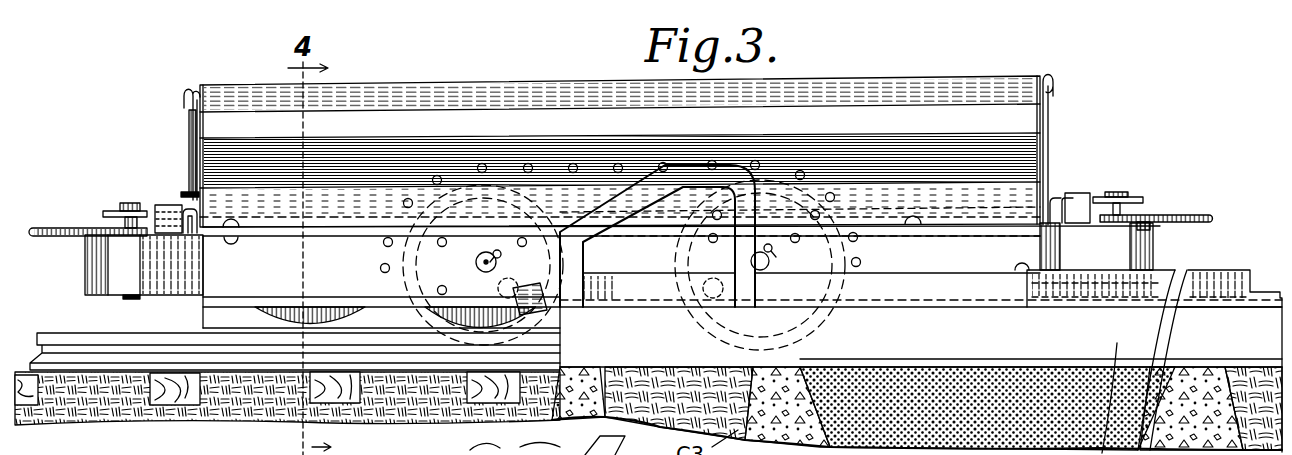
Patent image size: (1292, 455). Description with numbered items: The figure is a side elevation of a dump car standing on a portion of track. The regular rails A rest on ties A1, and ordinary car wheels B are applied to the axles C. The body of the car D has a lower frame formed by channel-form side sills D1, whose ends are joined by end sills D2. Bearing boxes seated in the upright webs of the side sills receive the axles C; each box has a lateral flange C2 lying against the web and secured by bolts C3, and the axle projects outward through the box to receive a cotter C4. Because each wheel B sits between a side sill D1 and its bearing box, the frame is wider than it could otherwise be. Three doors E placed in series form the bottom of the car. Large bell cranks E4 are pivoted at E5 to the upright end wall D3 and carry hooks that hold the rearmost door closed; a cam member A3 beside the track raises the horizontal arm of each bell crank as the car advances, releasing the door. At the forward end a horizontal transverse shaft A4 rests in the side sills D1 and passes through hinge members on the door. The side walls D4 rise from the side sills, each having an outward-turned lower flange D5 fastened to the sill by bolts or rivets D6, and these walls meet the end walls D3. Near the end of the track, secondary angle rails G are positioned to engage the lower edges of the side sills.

The body of the car D is at (620, 145).
The side wall D4 is at (388, 118).
The upright end wall D3 is at (193, 146).
The pivot E5 is at (188, 185).
The bell crank E4 is at (181, 194).
The end sill D2 is at (118, 262).
The lower flange D5 is at (280, 228).
The bolts or rivets D6 is at (233, 222).
The channel-form side sill D1 is at (226, 288).
The door E is at (284, 310).
The car wheel B is at (440, 309).
The lateral flange C2 is at (500, 285).
The axle C is at (752, 261).
The cotter C4 is at (477, 262).
The bolts C3 is at (437, 241).
The cam member A3 is at (613, 207).
The rail A is at (67, 357).
The tie A1 is at (320, 393).
The shaft A4 is at (1028, 272).
The auxiliary or secondary rail G is at (1165, 270).